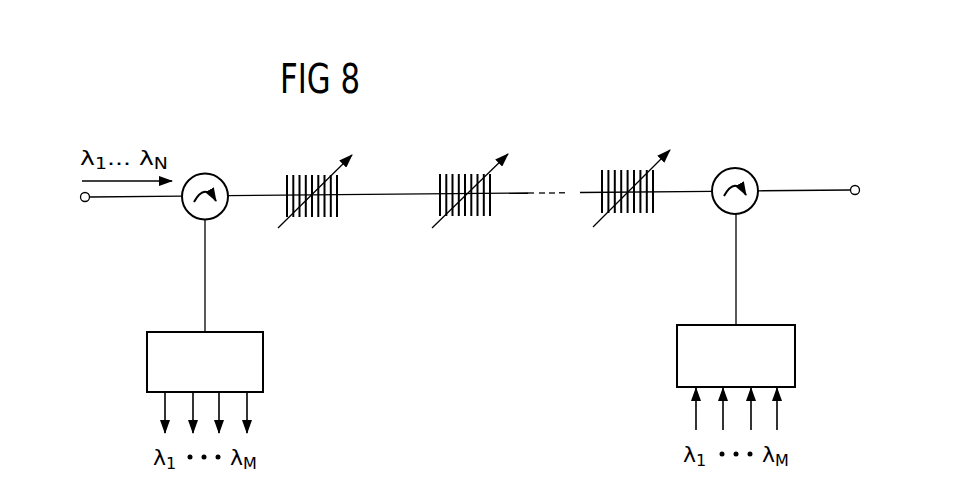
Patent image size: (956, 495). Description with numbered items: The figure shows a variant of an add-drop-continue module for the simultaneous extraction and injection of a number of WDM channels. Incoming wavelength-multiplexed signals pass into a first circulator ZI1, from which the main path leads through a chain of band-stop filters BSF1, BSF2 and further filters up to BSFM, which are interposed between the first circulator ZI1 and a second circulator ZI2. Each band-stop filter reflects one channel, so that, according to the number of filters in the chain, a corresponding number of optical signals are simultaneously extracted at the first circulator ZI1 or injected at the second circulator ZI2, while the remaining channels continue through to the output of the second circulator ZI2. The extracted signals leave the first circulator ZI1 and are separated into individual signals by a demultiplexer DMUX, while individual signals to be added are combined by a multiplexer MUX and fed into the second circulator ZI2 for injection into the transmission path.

The circulator ZI1 is at (205, 173).
The circulator ZI2 is at (736, 167).
The band-stop filter BSF1 is at (312, 217).
The band-stop filter BSF2 is at (465, 216).
The band-stop filter BSFM is at (628, 213).
The demultiplexer DMUX is at (205, 362).
The multiplexer MUX is at (736, 356).